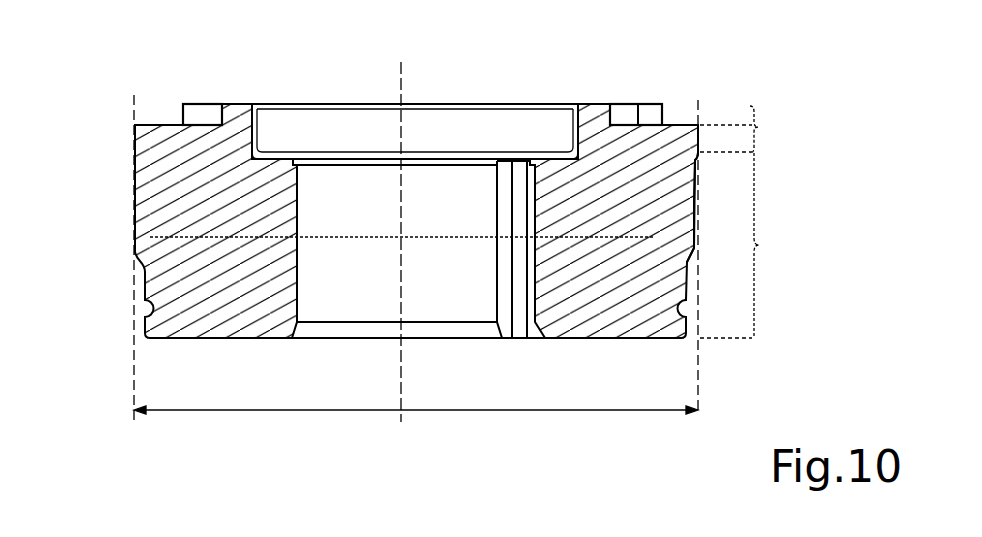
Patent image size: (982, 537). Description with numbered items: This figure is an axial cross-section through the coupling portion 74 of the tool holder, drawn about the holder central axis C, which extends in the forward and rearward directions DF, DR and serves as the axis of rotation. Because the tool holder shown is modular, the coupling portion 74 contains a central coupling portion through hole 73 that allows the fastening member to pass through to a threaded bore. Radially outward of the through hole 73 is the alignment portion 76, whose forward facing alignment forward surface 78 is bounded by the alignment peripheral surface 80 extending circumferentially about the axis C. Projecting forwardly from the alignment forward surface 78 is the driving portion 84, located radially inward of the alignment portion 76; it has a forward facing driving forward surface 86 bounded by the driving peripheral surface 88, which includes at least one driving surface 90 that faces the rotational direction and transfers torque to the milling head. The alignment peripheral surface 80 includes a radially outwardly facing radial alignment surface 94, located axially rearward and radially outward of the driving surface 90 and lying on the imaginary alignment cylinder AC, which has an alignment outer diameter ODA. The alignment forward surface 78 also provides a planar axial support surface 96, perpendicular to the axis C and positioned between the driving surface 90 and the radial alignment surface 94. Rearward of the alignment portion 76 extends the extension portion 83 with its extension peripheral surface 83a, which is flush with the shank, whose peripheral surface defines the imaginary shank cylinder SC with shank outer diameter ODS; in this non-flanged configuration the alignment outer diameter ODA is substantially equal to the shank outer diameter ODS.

The coupling portion 74 is at (147, 77).
The coupling portion through hole 73 is at (353, 187).
The driving peripheral surface 88 is at (197, 113).
The driving surface 90 is at (630, 113).
The axial support surface 96 is at (163, 125).
The driving forward surface 86 is at (595, 105).
The alignment forward surface 78 is at (675, 125).
The radial alignment surface 94 is at (135, 152).
The driving portion 84 is at (743, 127).
The alignment portion 76 is at (742, 138).
The alignment peripheral surface 80 is at (699, 138).
The extension portion 83 is at (743, 245).
The extension peripheral surface 83a is at (690, 253).
The imaginary alignment cylinder AC is at (700, 127).
The imaginary shank cylinder SC is at (134, 355).
The holder central axis C is at (401, 86).
The forward direction DF is at (412, 25).
The rearward direction DR is at (412, 363).
The alignment outer diameter ODA is at (585, 238).
The shank outer diameter ODS is at (515, 410).